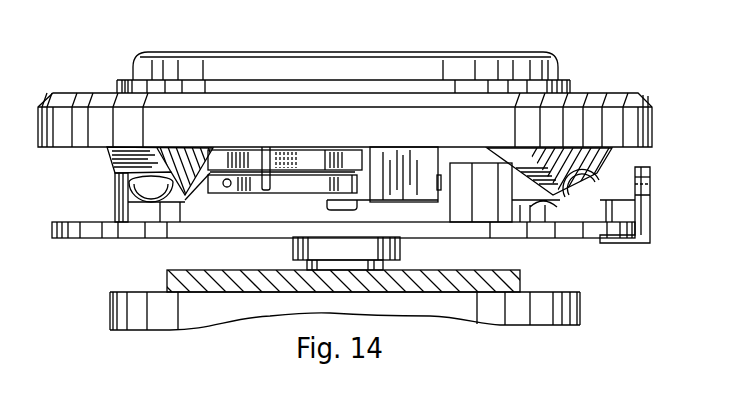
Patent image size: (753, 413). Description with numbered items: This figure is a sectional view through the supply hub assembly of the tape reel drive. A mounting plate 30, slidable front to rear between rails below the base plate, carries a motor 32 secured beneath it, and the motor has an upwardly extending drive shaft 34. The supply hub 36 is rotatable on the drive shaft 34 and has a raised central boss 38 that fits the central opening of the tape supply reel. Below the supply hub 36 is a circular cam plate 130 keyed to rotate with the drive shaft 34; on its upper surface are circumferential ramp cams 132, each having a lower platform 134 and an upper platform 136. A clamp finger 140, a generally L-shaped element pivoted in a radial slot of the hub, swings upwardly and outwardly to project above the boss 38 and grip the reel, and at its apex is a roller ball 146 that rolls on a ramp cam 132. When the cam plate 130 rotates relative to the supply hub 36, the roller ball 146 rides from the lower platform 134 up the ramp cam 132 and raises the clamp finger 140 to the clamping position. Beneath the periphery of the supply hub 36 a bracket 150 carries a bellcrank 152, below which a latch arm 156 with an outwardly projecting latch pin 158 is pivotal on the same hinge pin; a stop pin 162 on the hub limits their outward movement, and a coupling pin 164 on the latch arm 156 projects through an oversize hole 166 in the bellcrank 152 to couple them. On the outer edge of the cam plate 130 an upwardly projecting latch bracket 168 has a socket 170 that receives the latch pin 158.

The mounting plate 30 is at (520, 277).
The motor 32 is at (122, 308).
The drive shaft 34 is at (385, 265).
The supply hub 36 is at (602, 113).
The raised central boss 38 is at (448, 62).
The cam plate 130 is at (68, 232).
The ramp cam 132 is at (450, 163).
The lower platform 134 is at (130, 204).
The upper platform 136 is at (467, 163).
The clamp finger 140 is at (112, 162).
The roller ball 146 is at (155, 197).
The bracket 150 is at (385, 163).
The bellcrank 152 is at (218, 157).
The latch arm 156 is at (250, 193).
The latch pin 158 is at (223, 190).
The stop pin 162 is at (267, 163).
The coupling pin 164 is at (290, 180).
The oversize hole 166 is at (297, 155).
The latch bracket 168 is at (645, 212).
The socket 170 is at (652, 182).